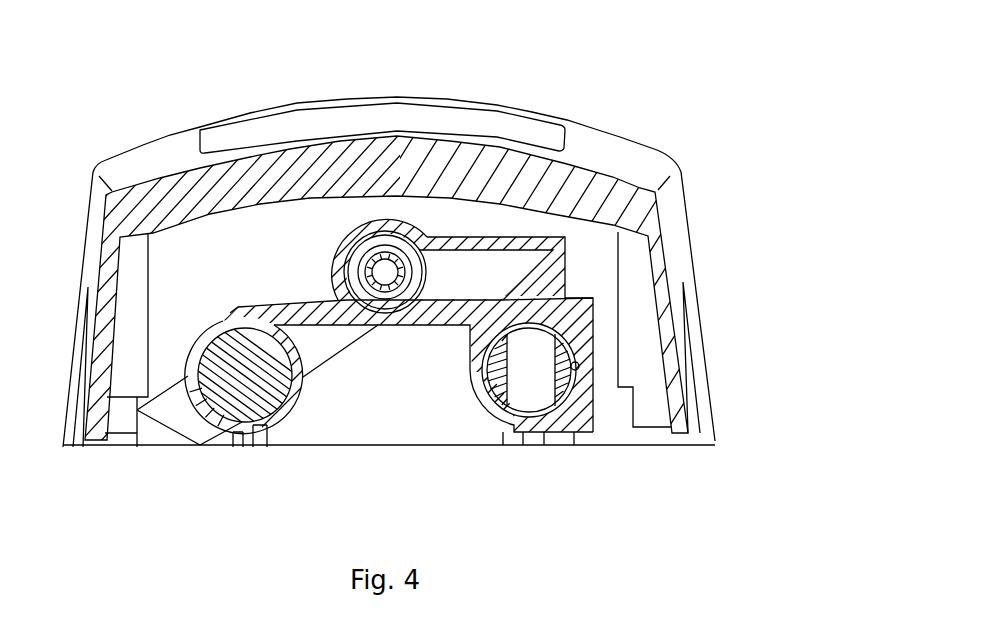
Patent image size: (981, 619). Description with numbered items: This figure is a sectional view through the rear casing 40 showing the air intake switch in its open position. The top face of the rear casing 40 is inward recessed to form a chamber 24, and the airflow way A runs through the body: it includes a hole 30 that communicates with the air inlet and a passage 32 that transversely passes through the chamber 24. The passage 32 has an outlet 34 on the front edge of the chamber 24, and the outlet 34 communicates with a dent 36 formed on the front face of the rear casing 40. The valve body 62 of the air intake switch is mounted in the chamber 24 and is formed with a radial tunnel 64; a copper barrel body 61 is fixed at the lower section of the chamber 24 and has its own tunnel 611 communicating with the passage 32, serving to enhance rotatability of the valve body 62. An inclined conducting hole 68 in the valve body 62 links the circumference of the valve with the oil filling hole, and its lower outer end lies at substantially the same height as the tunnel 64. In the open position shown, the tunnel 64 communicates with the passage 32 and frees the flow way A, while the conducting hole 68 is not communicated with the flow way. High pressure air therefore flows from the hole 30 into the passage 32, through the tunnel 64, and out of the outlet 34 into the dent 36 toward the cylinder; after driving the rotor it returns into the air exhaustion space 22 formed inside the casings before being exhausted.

The air exhaustion space 22 is at (287, 232).
The hole 30 is at (383, 247).
The airflow way A is at (448, 262).
The passage 32 is at (503, 270).
The rear casing 40 is at (699, 204).
The copper barrel body 61 is at (577, 362).
The dent 36 is at (350, 427).
The outlet 34 is at (482, 391).
The valve body 62 is at (485, 401).
The radial tunnel 64 is at (520, 392).
The tunnel 611 is at (536, 413).
The chamber 24 is at (553, 390).
The conducting hole 68 is at (578, 384).